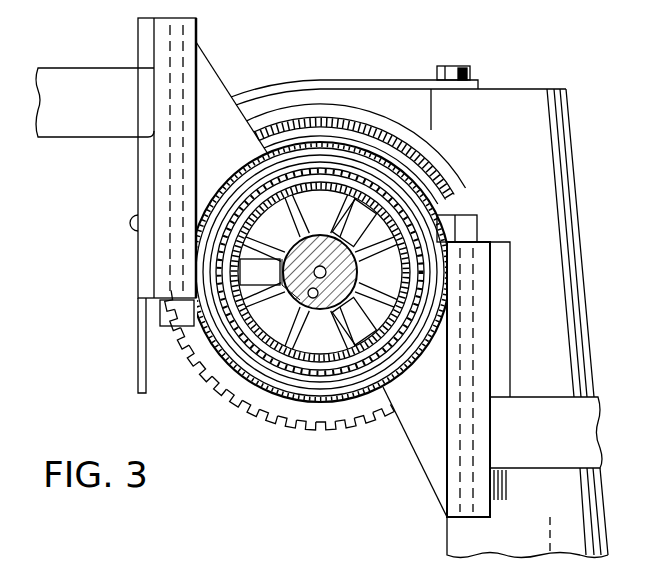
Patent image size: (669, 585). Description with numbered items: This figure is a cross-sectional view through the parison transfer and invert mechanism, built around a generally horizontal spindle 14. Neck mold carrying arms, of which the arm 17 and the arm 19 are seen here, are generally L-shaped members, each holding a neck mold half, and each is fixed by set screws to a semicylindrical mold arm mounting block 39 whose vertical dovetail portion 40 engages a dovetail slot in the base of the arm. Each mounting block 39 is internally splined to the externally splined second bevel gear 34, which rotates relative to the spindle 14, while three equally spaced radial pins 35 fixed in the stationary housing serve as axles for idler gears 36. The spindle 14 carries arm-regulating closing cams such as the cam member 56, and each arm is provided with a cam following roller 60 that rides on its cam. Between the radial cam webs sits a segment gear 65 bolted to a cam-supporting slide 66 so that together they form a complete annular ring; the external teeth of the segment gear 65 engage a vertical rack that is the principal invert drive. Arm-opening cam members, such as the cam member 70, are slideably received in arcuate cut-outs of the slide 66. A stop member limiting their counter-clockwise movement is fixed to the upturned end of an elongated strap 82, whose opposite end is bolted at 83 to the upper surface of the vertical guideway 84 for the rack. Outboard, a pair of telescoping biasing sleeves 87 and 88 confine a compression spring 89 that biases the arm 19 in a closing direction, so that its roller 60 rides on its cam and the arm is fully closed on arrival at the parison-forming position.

The spindle 14 is at (312, 350).
The neck mold carrying arm 17 is at (583, 425).
The neck mold arm 19 is at (76, 136).
The second bevel gear 34 is at (270, 350).
The pin 35 is at (213, 198).
The idler gear 36 is at (209, 382).
The mold arm mounting block 39 is at (208, 68).
The dovetail portion 40 is at (320, 272).
The cam member 56 is at (405, 130).
The cam following roller 60 is at (432, 176).
The segment gear 65 is at (320, 412).
The cam-supporting slide 66 is at (386, 130).
The arm-opening cam member 70 is at (292, 125).
The strap 82 is at (352, 82).
The bolt 83 is at (470, 76).
The vertical guideway 84 is at (556, 240).
The outboard biasing sleeve 87 is at (451, 284).
The outboard biasing sleeve 88 is at (470, 230).
The compression spring 89 is at (456, 197).